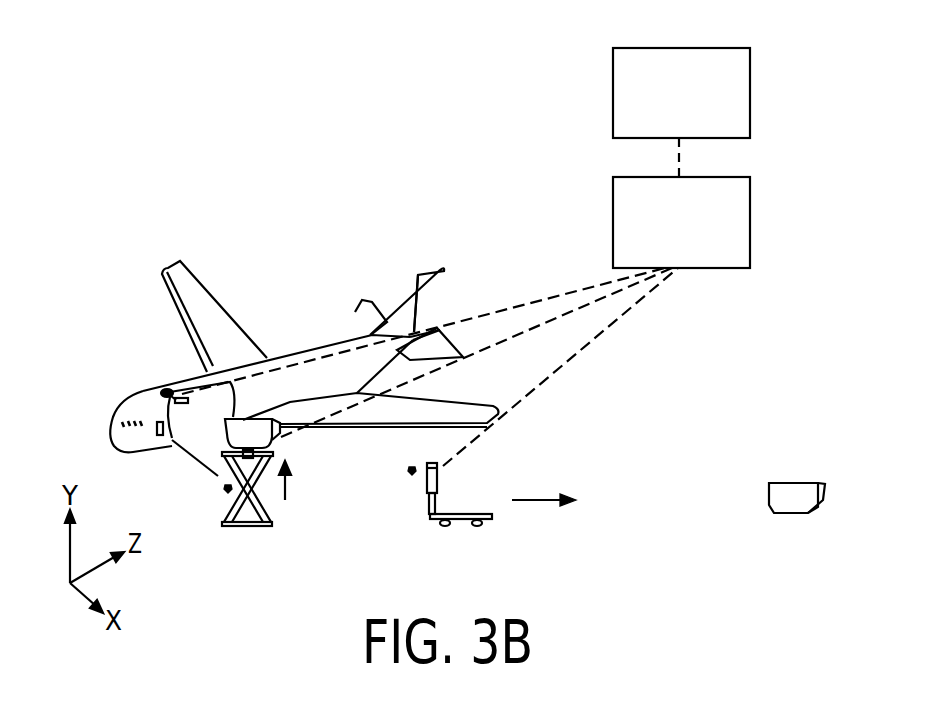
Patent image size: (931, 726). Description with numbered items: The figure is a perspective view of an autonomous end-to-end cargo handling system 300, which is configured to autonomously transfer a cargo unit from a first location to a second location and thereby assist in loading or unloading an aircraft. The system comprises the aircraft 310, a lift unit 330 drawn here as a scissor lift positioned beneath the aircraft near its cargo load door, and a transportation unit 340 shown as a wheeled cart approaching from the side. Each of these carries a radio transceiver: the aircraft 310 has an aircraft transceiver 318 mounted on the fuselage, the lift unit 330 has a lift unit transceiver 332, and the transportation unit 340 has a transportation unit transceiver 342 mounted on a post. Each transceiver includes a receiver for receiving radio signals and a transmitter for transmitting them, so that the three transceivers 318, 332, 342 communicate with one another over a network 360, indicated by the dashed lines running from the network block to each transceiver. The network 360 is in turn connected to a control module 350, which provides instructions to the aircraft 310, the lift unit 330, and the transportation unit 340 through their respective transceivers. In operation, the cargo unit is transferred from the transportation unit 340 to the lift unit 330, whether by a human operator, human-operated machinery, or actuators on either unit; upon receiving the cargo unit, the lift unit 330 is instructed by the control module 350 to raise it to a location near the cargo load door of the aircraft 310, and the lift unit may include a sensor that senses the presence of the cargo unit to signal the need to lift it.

The autonomous end-to-end cargo handling system 300 is at (178, 128).
The aircraft 310 is at (288, 347).
The aircraft transceiver 318 is at (172, 446).
The lift unit 330 is at (263, 500).
The lift unit transceiver 332 is at (218, 476).
The transportation unit 340 is at (430, 515).
The transportation unit transceiver 342 is at (438, 474).
The control module 350 is at (750, 91).
The network 360 is at (750, 213).